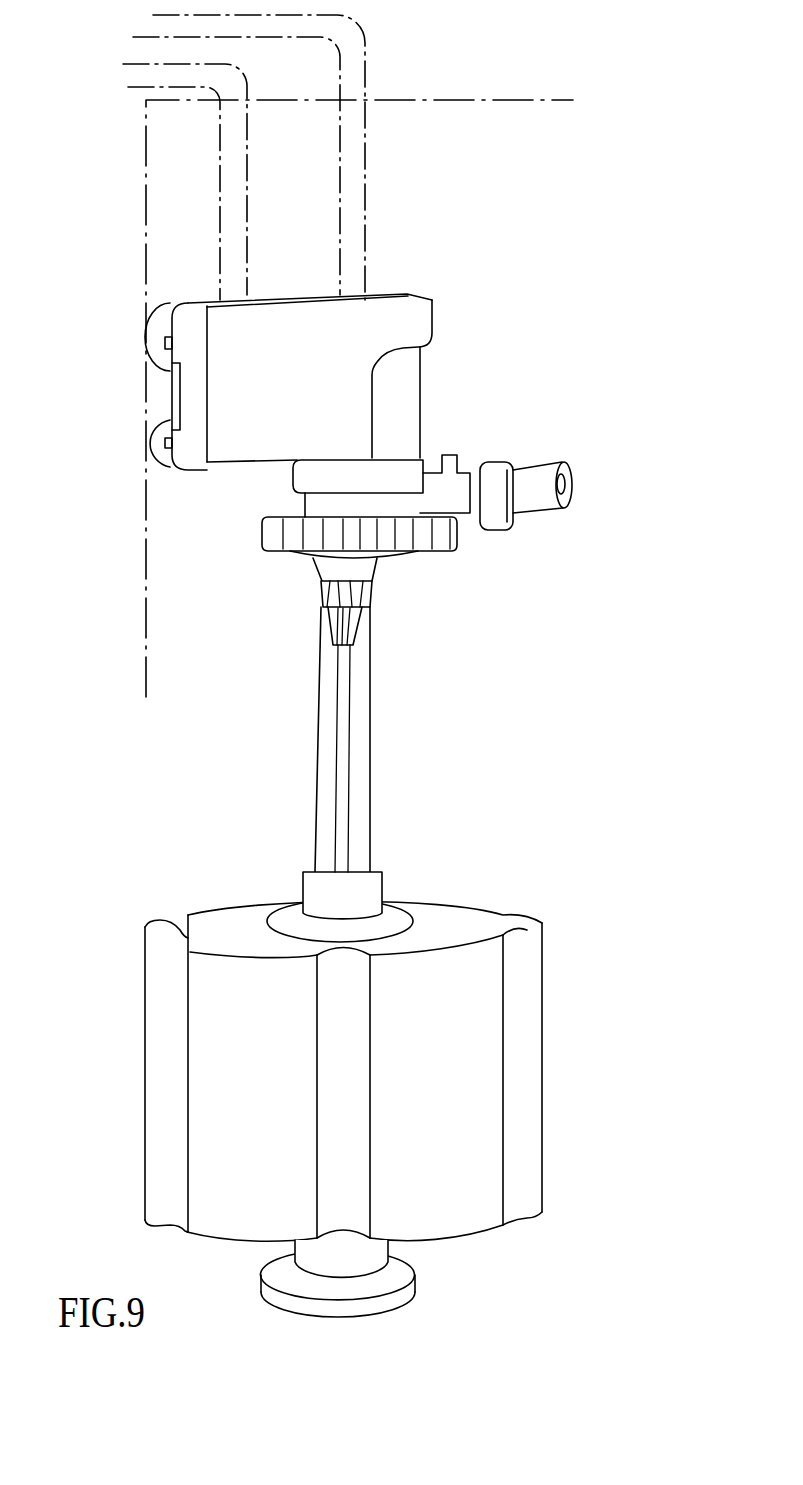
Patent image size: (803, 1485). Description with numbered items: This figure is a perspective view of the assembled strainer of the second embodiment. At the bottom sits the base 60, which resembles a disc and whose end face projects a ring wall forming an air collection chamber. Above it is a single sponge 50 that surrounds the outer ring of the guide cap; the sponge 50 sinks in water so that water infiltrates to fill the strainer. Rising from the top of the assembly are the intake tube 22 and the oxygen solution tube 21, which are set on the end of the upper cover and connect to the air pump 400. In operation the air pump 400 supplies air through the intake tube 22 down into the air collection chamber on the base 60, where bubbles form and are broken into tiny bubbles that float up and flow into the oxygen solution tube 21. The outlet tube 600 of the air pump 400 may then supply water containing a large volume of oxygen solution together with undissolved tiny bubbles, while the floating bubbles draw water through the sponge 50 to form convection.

The air pump 400 is at (407, 325).
The outlet tube 600 is at (533, 503).
The oxygen solution tube 21 is at (357, 707).
The intake tube 22 is at (342, 803).
The sponge 50 is at (523, 1120).
The base 60 is at (375, 1305).